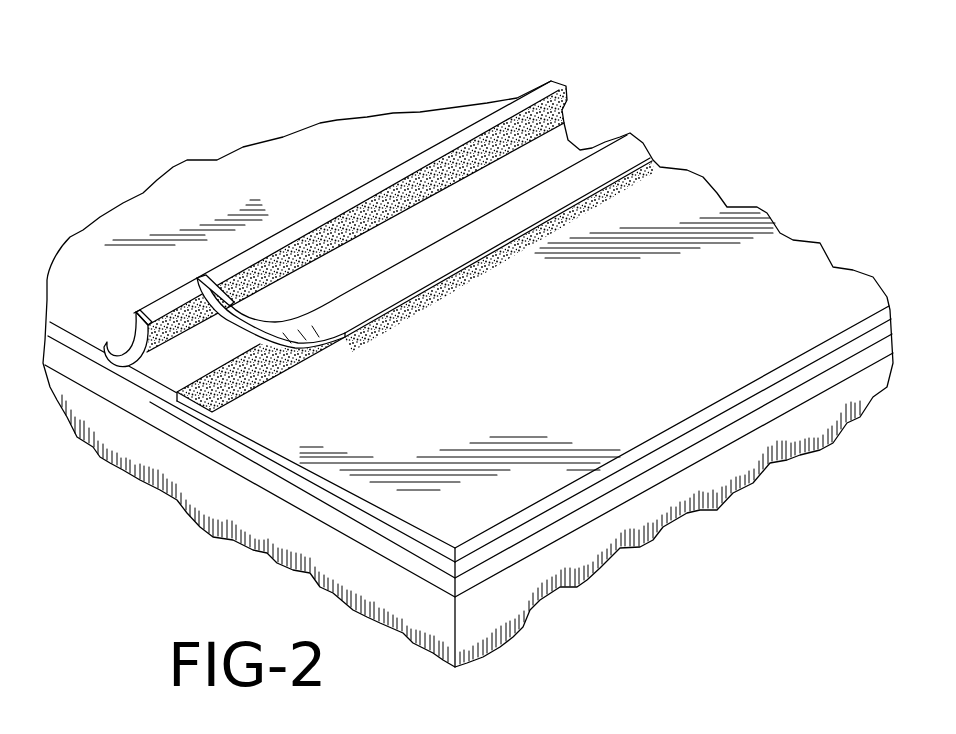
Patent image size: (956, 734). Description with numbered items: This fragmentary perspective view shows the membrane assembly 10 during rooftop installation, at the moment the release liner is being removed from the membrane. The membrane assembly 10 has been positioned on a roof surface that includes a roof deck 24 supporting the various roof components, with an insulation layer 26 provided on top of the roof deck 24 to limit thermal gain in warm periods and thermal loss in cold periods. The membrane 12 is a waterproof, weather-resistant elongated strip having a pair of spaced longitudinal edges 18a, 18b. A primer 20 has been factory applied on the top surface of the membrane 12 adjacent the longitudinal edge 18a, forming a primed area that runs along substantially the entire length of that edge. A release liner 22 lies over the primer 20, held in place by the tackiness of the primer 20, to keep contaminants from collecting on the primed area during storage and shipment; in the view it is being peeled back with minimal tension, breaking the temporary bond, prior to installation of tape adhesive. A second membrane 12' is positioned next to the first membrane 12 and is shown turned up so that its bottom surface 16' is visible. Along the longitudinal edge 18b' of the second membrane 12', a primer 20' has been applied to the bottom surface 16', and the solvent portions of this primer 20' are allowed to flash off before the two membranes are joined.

The membrane assembly 10 is at (463, 350).
The membrane 12 is at (468, 374).
The second membrane 12' is at (330, 200).
The bottom surface 16' is at (118, 312).
The longitudinal edge 18a is at (168, 393).
The longitudinal edge 18b is at (534, 461).
The longitudinal edge 18b' is at (347, 203).
The primer 20 is at (416, 288).
The primer 20' is at (386, 192).
The release liner 22 is at (390, 288).
The roof deck 24 is at (687, 457).
The insulation layer 26 is at (300, 480).